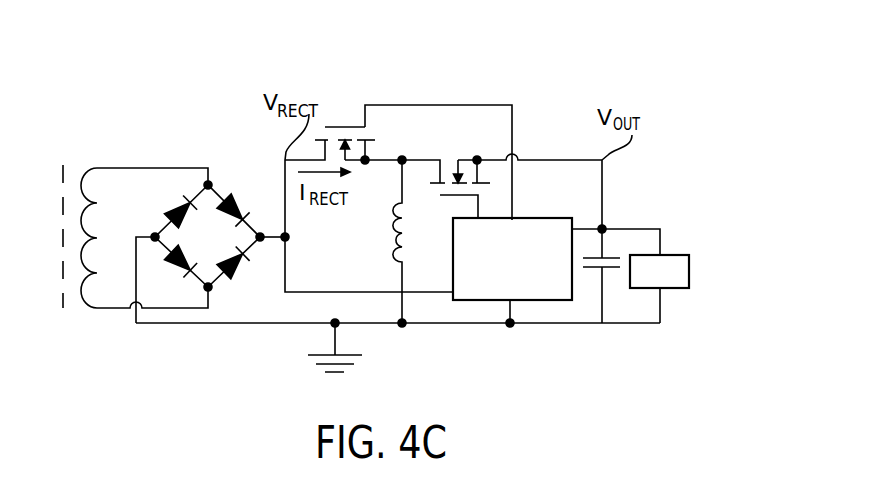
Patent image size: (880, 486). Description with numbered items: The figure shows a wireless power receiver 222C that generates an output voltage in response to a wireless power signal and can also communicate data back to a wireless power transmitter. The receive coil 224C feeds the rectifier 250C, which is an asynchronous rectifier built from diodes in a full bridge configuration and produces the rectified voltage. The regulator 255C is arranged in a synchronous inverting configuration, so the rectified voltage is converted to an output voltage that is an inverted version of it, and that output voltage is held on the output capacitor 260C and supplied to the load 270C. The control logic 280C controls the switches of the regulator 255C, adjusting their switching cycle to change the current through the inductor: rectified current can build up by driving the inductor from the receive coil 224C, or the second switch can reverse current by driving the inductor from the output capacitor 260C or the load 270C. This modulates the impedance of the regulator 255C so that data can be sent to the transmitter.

The wireless power receiver 222C is at (358, 58).
The receive coil 224C is at (90, 308).
The rectifier 250C is at (240, 175).
The regulator 255C is at (434, 92).
The output capacitor 260C is at (613, 268).
The load 270C is at (690, 270).
The control logic 280C is at (555, 300).